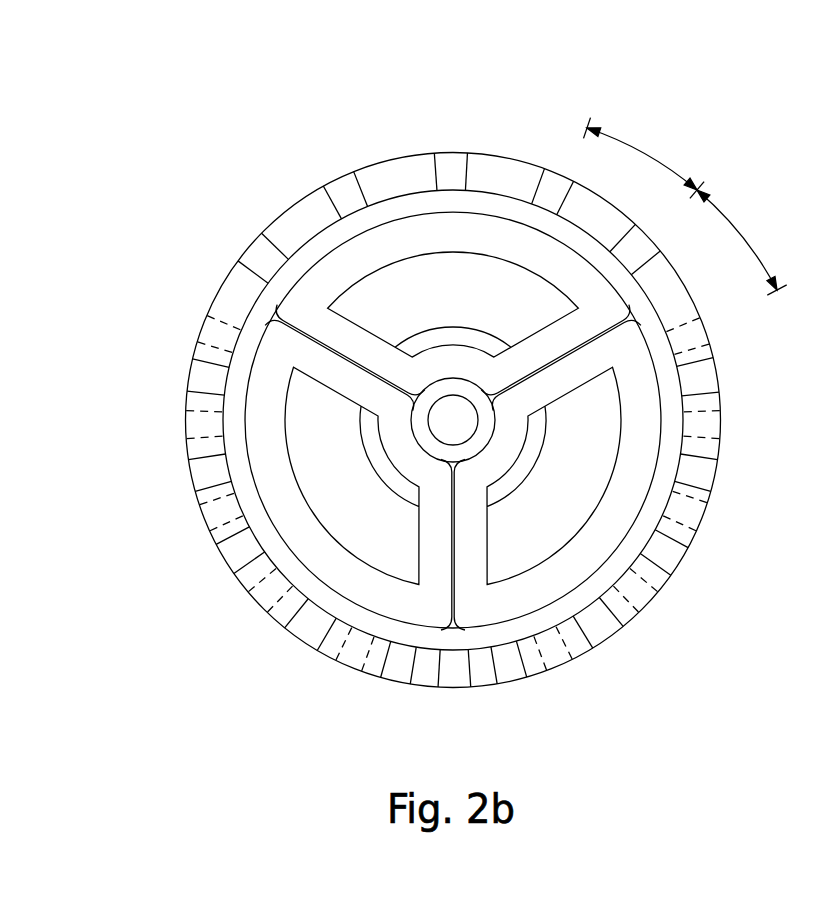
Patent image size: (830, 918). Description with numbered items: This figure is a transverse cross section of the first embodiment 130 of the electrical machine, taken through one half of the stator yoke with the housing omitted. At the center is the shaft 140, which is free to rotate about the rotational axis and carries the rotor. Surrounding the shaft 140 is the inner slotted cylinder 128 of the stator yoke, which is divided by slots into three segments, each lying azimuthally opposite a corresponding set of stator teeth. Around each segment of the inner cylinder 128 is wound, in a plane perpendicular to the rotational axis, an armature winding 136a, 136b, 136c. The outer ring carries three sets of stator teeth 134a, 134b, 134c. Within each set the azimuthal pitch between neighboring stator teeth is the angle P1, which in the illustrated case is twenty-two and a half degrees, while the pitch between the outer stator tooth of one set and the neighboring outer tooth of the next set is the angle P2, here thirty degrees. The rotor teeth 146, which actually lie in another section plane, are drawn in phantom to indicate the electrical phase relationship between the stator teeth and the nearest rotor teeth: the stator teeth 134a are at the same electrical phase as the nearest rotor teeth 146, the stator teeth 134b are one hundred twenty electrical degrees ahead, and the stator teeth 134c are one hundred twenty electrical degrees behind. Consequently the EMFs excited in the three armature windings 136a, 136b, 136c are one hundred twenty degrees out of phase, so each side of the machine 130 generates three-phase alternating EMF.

The first embodiment of electrical machine 130 is at (705, 120).
The stator teeth (set a) 134a is at (249, 257).
The stator teeth (set b) 134b is at (708, 377).
The stator teeth (set c) 134c is at (199, 377).
The rotor teeth 146 is at (215, 332).
The armature winding (segment a) 136a is at (487, 246).
The armature winding (segment b) 136b is at (527, 616).
The armature winding (segment c) 136c is at (439, 616).
The inner slotted cylinder 128 is at (472, 310).
The shaft 140 is at (440, 428).
The azimuthal pitch angle between neighboring stator teeth within a set P1 is at (644, 156).
The azimuthal pitch angle between neighboring sets of stator teeth P2 is at (742, 242).